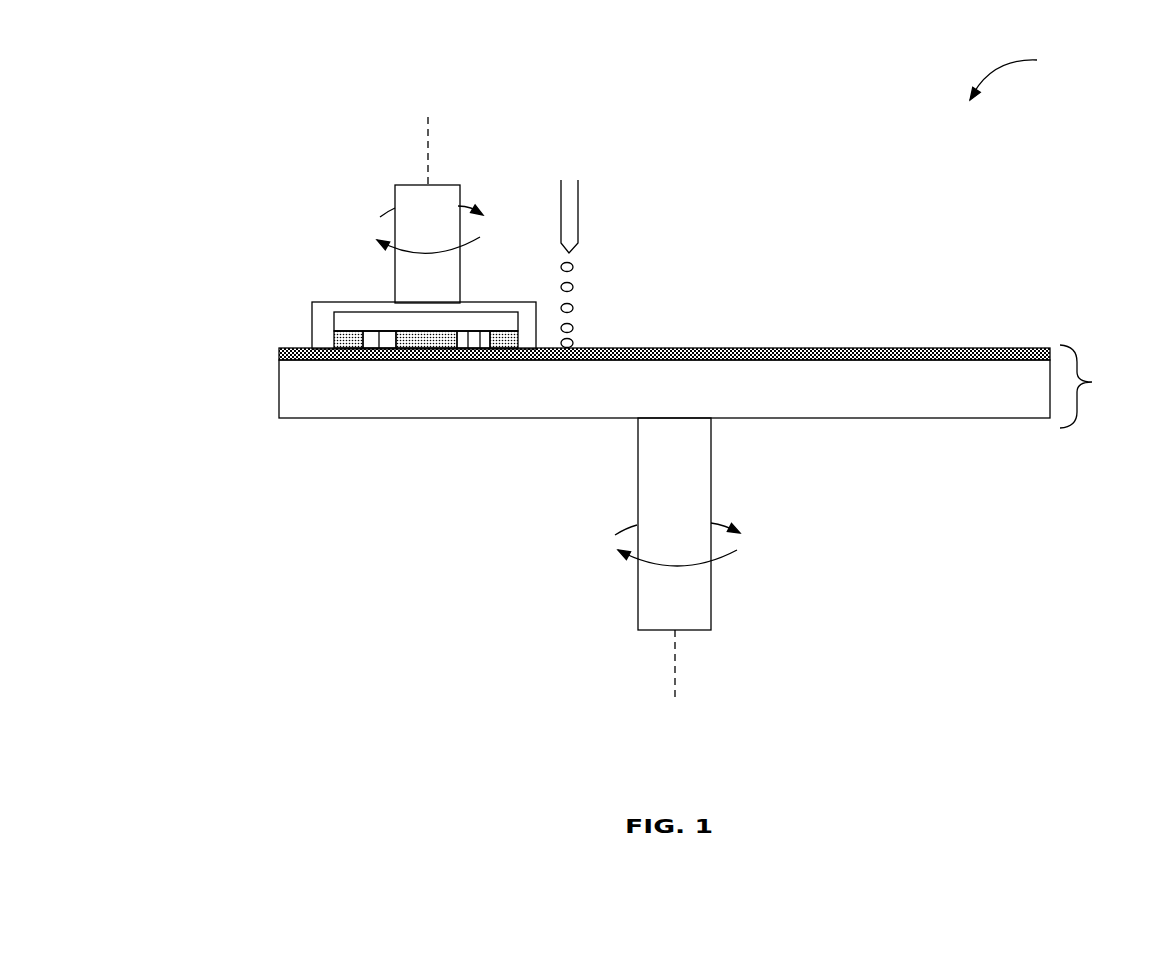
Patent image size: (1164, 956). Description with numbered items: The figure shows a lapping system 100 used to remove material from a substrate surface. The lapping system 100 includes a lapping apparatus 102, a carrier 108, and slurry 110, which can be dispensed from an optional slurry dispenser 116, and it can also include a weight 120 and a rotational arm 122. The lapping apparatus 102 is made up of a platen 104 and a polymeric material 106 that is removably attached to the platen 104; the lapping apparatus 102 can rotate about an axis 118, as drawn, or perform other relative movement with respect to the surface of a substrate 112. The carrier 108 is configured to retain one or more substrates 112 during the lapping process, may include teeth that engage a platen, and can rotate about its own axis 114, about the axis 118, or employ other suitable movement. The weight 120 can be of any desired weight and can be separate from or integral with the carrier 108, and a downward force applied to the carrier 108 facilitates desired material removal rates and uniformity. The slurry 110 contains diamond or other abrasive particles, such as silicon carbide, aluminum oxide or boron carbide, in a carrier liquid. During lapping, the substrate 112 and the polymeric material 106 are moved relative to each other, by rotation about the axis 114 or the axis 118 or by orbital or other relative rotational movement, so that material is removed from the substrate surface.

The lapping system 100 is at (1026, 73).
The lapping apparatus 102 is at (661, 384).
The platen 104 is at (293, 403).
The polymeric material 106 is at (280, 348).
The carrier 108 is at (345, 347).
The slurry 110 is at (572, 288).
The substrate 112 is at (372, 346).
The axis 114 is at (428, 157).
The slurry dispenser 116 is at (577, 202).
The axis 118 is at (675, 667).
The weight 120 is at (462, 328).
The rotational arm 122 is at (412, 206).